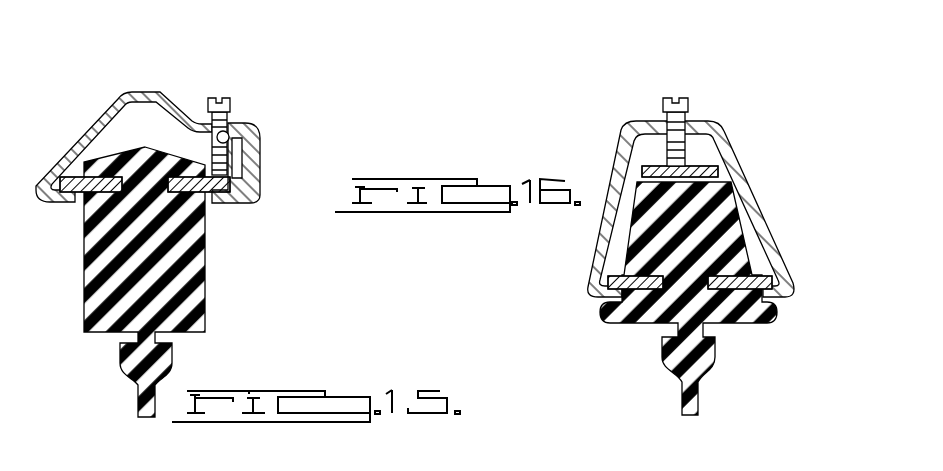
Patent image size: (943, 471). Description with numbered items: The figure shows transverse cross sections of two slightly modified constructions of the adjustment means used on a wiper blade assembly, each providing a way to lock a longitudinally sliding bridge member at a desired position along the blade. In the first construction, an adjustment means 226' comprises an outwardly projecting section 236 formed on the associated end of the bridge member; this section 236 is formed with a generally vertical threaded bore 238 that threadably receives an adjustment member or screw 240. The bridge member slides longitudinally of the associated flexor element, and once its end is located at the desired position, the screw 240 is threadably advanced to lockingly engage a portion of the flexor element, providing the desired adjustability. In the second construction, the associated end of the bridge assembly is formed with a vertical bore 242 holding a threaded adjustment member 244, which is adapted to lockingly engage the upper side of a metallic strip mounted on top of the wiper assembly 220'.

In FIG. 15, the resilient mounting body 220' is at (218, 282).
In FIG. 15, the adjustment means 226' is at (124, 107).
In FIG. 15, the outwardly projecting section 236 is at (254, 153).
In FIG. 15, the threaded bore 238 is at (243, 123).
In FIG. 15, the adjustment member or screw 240 is at (225, 96).
In FIG. 16, the vertical bore 242 is at (667, 117).
In FIG. 16, the threaded adjustment member 244 is at (683, 100).